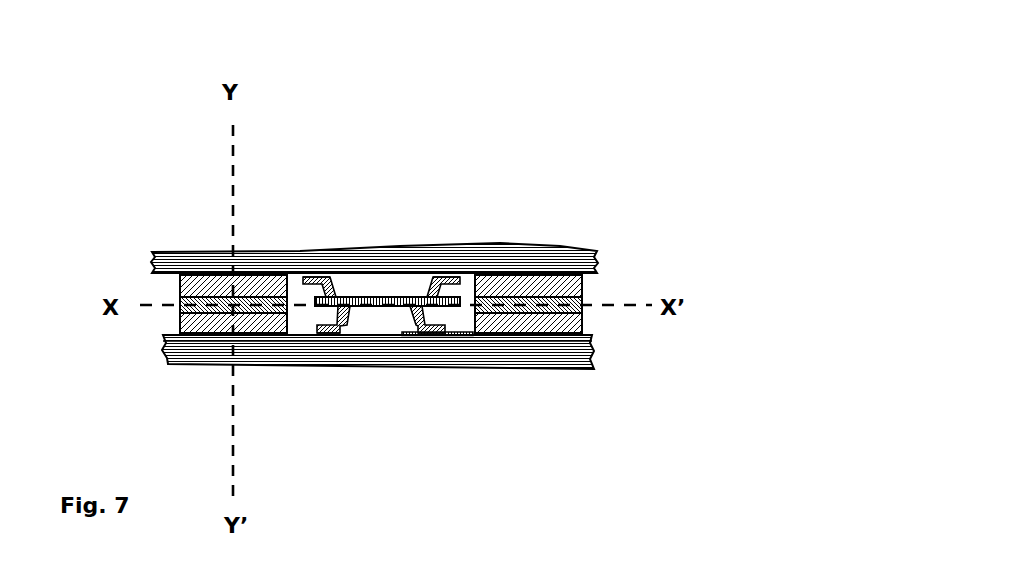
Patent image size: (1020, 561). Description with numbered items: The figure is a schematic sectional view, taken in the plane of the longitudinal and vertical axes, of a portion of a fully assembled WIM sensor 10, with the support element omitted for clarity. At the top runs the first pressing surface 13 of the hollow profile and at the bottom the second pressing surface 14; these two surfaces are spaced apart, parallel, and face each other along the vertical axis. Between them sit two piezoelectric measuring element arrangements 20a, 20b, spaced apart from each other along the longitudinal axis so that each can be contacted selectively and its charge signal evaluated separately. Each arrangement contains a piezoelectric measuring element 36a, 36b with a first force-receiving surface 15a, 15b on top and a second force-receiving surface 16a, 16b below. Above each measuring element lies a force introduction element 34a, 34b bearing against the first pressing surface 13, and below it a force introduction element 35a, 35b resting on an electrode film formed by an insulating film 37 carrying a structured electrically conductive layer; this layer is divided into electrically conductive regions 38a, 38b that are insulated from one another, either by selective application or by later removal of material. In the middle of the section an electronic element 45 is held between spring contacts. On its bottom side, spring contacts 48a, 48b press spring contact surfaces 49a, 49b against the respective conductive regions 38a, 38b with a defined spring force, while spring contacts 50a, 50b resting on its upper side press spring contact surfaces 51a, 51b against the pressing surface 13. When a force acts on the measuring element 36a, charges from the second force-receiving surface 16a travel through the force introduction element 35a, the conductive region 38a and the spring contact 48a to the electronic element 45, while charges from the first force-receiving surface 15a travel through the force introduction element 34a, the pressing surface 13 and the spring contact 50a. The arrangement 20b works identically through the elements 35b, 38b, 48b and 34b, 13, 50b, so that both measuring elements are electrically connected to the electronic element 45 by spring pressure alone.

The WIM sensor 10 is at (135, 145).
The first pressing surface 13 is at (207, 265).
The second pressing surface 14 is at (405, 347).
The first force-receiving surface 15a is at (247, 296).
The first force-receiving surface 15b is at (543, 295).
The second force-receiving surface 16a is at (255, 313).
The second force-receiving surface 16b is at (523, 315).
The piezoelectric measuring element arrangement 20a is at (152, 321).
The piezoelectric measuring element arrangement 20b is at (606, 290).
The force introduction element 34a is at (185, 278).
The force introduction element 34b is at (565, 285).
The force introduction element 35a is at (205, 330).
The force introduction element 35b is at (560, 325).
The piezoelectric measuring element 36a is at (178, 300).
The piezoelectric measuring element 36b is at (567, 302).
The insulating film 37 is at (472, 342).
The electrically conductive region 38a is at (225, 333).
The electrically conductive region 38b is at (520, 338).
The electronic element 45 is at (420, 297).
The spring contact 48a is at (348, 311).
The spring contact 48b is at (417, 318).
The spring contact surface 49a is at (324, 336).
The spring contact surface 49b is at (445, 337).
The spring contact 50a is at (325, 280).
The spring contact 50b is at (431, 282).
The spring contact surface 51a is at (309, 278).
The spring contact surface 51b is at (458, 279).